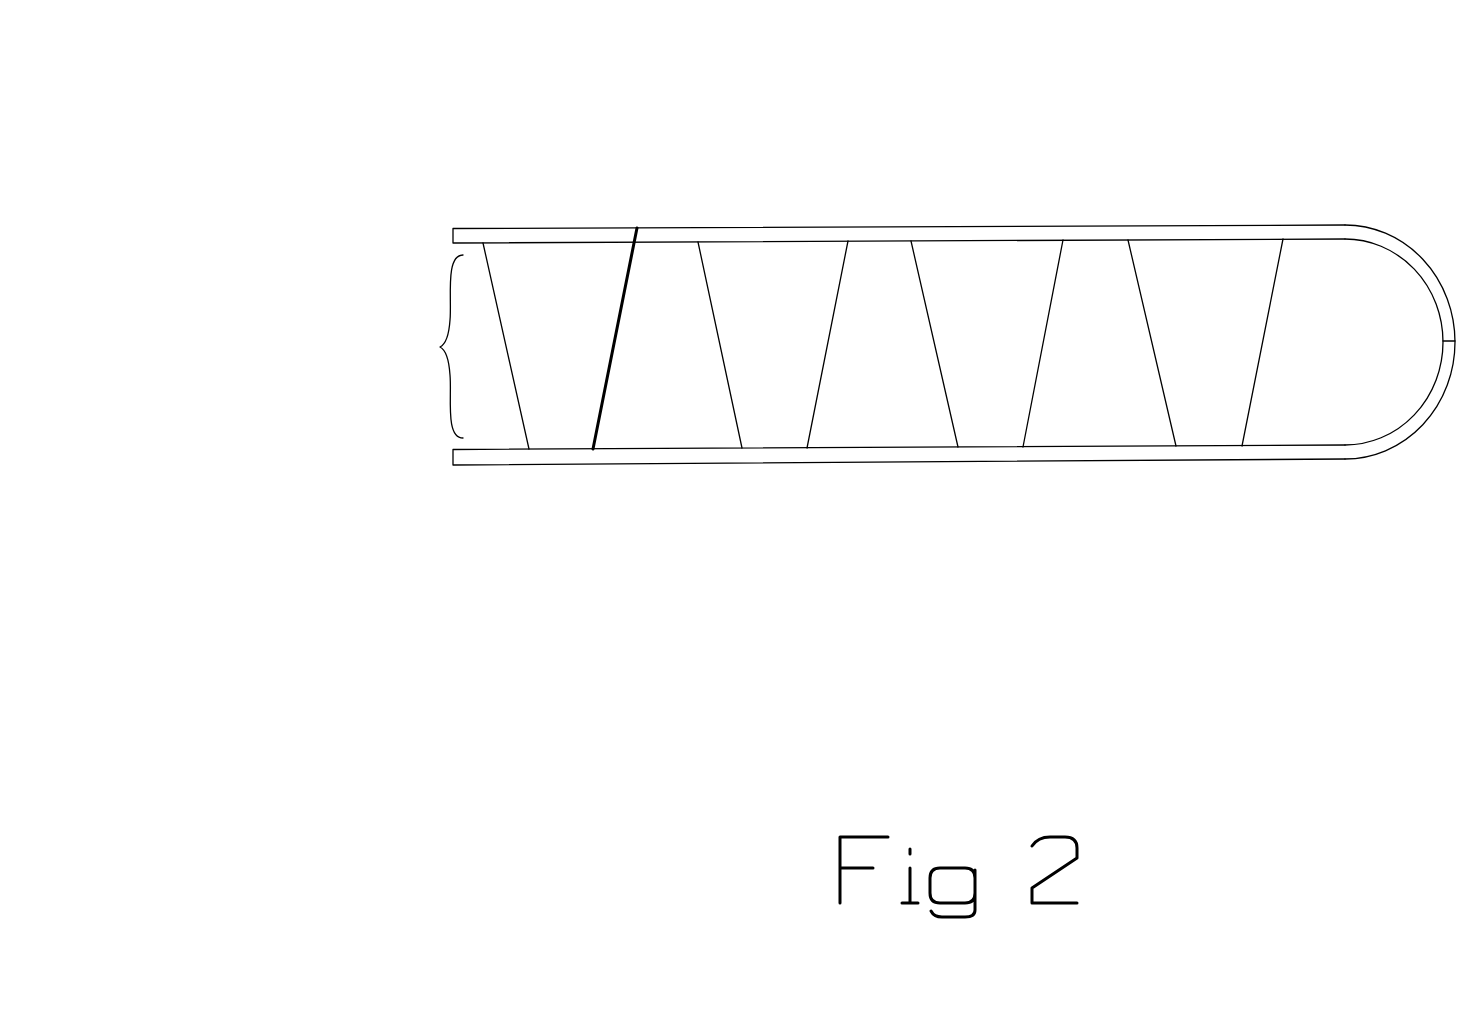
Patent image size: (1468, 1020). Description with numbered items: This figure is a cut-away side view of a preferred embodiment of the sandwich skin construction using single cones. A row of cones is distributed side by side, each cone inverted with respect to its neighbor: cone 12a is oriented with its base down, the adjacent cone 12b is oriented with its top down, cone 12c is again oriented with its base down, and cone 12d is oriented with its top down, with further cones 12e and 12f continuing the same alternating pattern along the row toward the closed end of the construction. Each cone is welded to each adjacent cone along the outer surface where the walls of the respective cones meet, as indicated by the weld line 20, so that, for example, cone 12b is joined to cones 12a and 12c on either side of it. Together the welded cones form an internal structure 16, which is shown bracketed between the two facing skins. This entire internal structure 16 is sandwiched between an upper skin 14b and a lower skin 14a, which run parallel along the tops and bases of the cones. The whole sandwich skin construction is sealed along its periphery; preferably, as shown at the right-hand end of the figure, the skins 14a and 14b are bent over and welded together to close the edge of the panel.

The cone 12a is at (469, 425).
The cone 12b is at (650, 472).
The cone 12c is at (791, 477).
The cone 12d is at (998, 431).
The strut segment 12e is at (995, 276).
The strut segment 12f is at (1103, 252).
The skin 14a is at (793, 482).
The skin 14b is at (793, 261).
The internal structure 16 is at (290, 336).
The weld line 20 is at (611, 261).